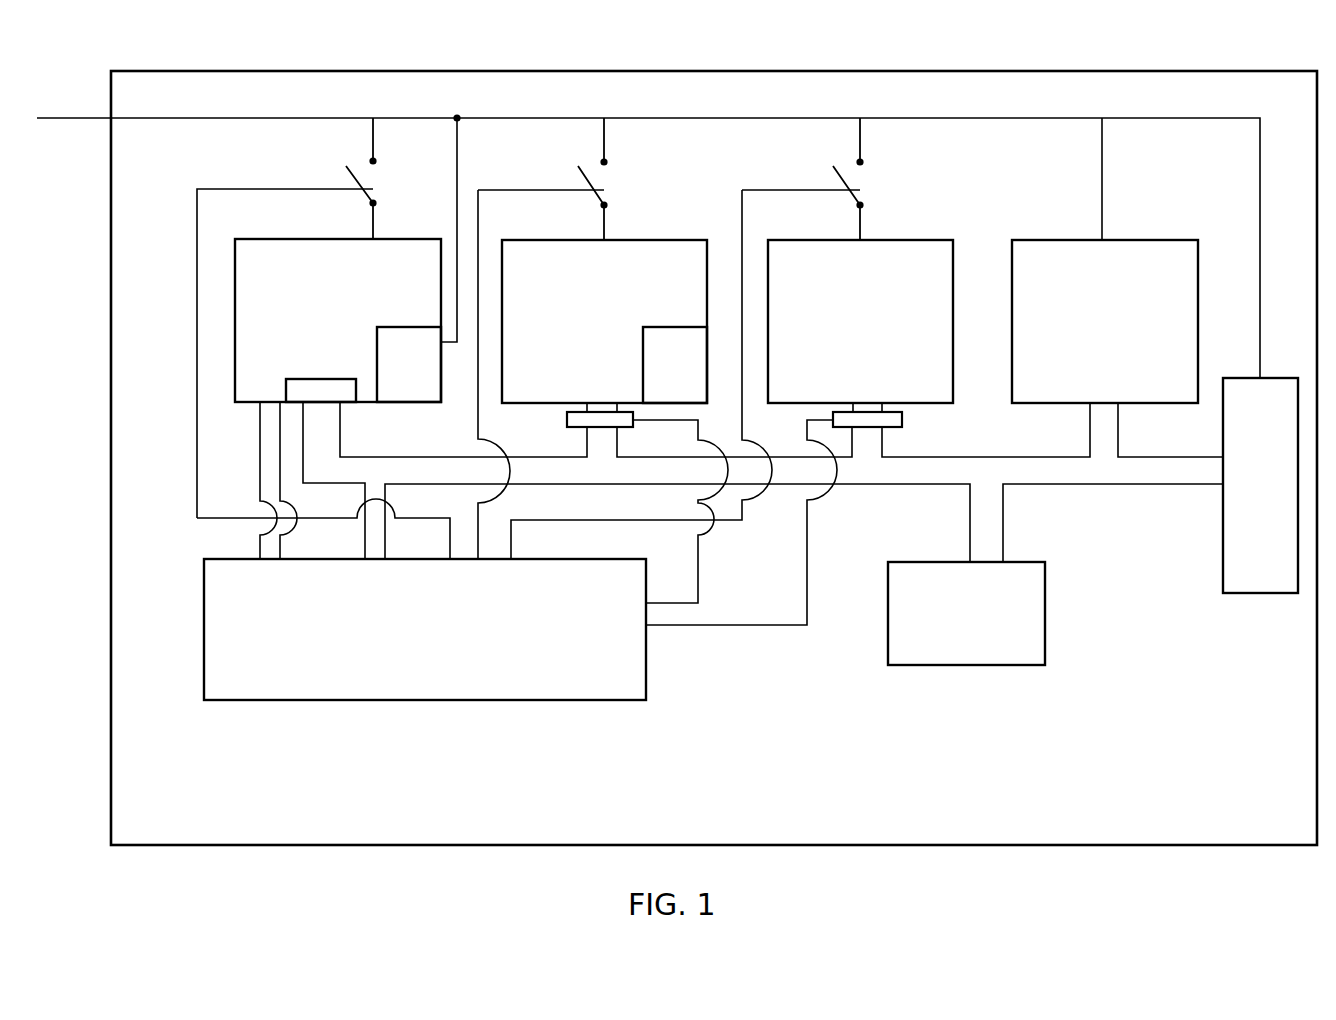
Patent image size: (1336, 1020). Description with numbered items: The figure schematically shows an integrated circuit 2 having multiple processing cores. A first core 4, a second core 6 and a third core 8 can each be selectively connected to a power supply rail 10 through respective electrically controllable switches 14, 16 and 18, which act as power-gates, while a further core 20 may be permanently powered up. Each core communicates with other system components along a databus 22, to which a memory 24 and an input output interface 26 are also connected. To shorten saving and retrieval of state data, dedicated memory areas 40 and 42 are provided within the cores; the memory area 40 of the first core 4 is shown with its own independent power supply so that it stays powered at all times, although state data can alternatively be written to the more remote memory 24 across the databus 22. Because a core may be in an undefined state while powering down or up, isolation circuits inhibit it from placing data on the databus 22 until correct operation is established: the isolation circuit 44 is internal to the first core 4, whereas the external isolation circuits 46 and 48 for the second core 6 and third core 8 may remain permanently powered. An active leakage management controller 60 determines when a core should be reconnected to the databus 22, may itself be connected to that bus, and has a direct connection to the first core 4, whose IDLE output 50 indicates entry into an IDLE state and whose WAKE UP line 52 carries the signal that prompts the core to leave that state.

The integrated circuit 2 is at (843, 73).
The power supply rail 10 is at (58, 118).
The electrically controllable switch 14 is at (364, 183).
The electrically controllable switch 16 is at (594, 183).
The electrically controllable switch 18 is at (850, 183).
The first core 4 is at (429, 239).
The second core 6 is at (699, 240).
The third core 8 is at (934, 240).
The core 20 is at (1171, 240).
The memory area 40 is at (407, 327).
The memory area 42 is at (671, 327).
The isolation circuit 44 is at (321, 379).
The isolation circuit 46 is at (567, 419).
The isolation circuit 48 is at (902, 419).
The IDLE output 50 is at (260, 445).
The WAKE UP line 52 is at (281, 551).
The databus 22 is at (1049, 486).
The memory 24 is at (965, 667).
The input output interface 26 is at (1260, 595).
The active leakage management controller 60 is at (358, 703).